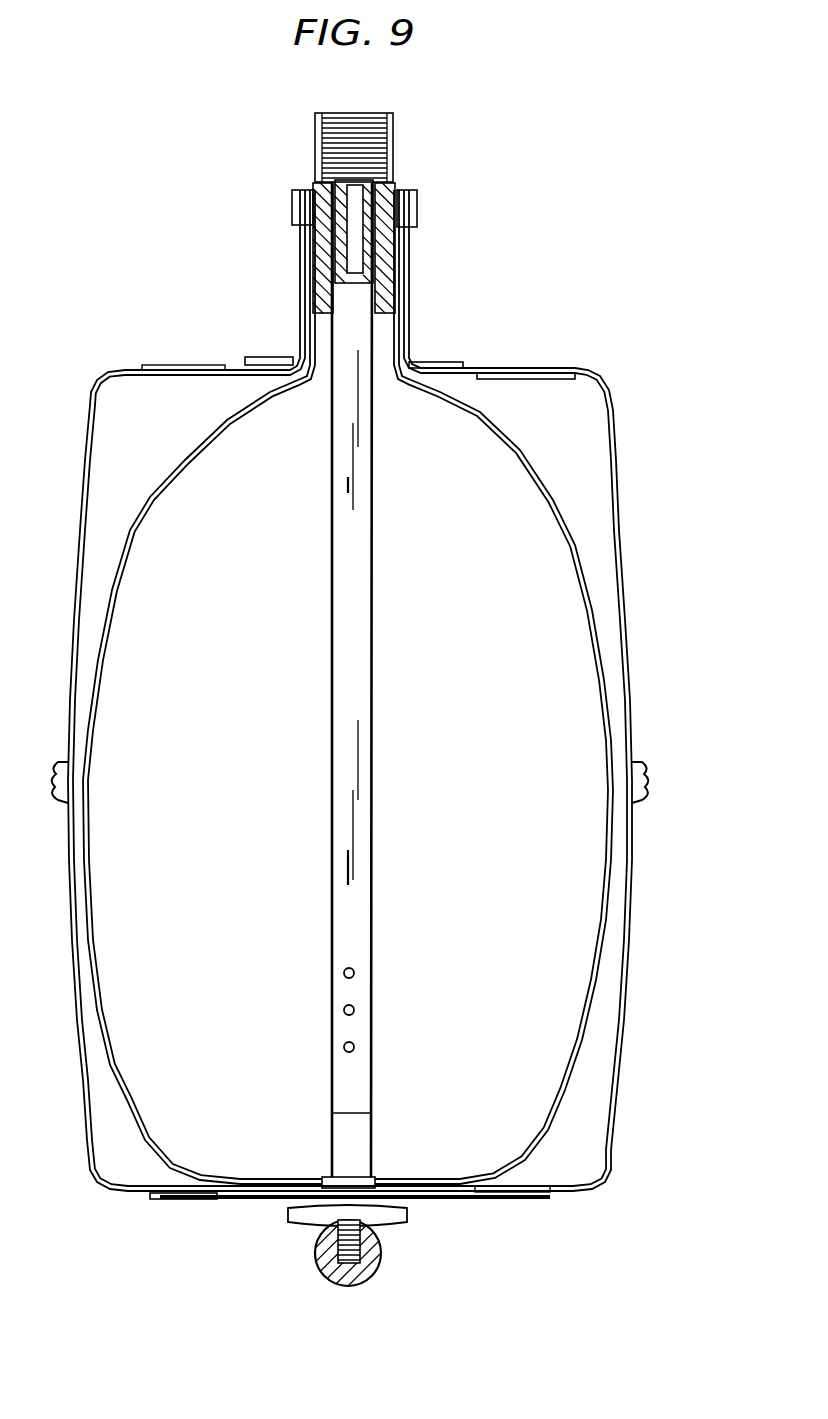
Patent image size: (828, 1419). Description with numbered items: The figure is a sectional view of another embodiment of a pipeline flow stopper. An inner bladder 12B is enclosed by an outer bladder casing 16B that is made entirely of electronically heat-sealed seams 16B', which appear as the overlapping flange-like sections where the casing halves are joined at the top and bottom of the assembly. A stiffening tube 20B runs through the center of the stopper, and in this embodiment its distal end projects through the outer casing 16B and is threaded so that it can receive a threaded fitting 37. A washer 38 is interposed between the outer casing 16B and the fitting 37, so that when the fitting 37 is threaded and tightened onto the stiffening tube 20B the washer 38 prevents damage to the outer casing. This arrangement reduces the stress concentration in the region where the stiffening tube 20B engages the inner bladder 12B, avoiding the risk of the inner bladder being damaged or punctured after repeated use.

The inner bladder 12B is at (573, 1073).
The outer bladder casing 16B is at (381, 690).
The electronically heat-sealed seams 16B' is at (359, 784).
The stiffening tube 20B is at (372, 803).
The threaded fitting 37 is at (366, 1283).
The washer 38 is at (407, 1223).